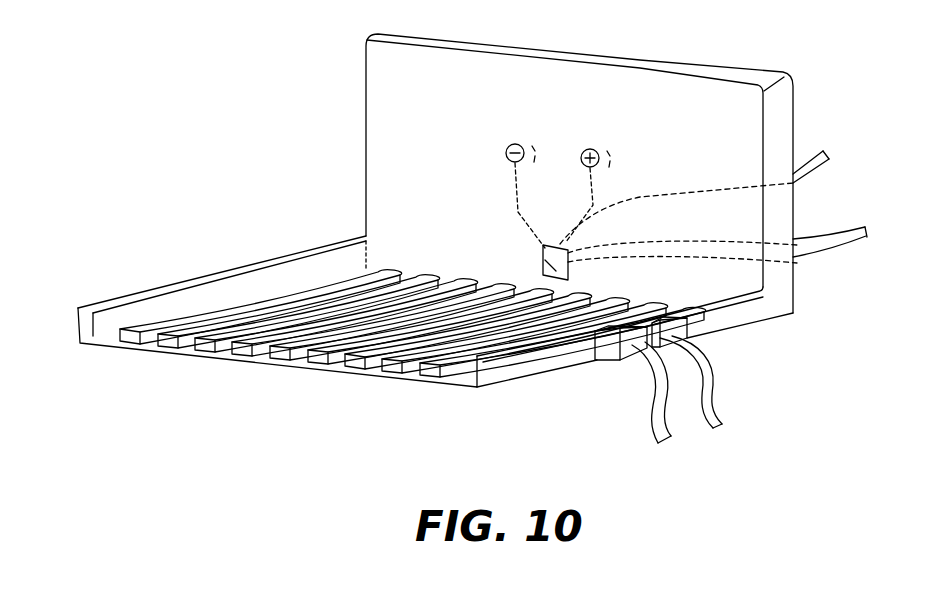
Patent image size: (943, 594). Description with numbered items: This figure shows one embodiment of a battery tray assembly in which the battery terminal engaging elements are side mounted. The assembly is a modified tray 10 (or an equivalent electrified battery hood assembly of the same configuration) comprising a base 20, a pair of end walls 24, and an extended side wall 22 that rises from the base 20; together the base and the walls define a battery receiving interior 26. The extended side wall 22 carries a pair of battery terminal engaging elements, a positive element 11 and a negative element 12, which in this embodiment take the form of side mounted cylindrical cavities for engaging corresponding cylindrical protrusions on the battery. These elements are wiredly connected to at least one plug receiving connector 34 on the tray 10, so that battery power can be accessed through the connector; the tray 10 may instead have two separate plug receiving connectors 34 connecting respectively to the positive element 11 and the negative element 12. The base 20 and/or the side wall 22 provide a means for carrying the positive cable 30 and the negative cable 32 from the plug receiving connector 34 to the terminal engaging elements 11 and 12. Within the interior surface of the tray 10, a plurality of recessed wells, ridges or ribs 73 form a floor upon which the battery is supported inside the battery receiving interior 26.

The tray 10 is at (435, 296).
The battery positive terminal engaging element 11 is at (589, 148).
The battery negative terminal engaging element 12 is at (514, 143).
The base 20 is at (435, 274).
The extended side wall 22 is at (703, 94).
The end walls 24 is at (214, 277).
The battery receiving interior 26 is at (257, 312).
The positive cable 30 is at (834, 226).
The negative cable 32 is at (812, 158).
The plug receiving connector 34 is at (546, 264).
The ridges or ribs 73 is at (342, 292).